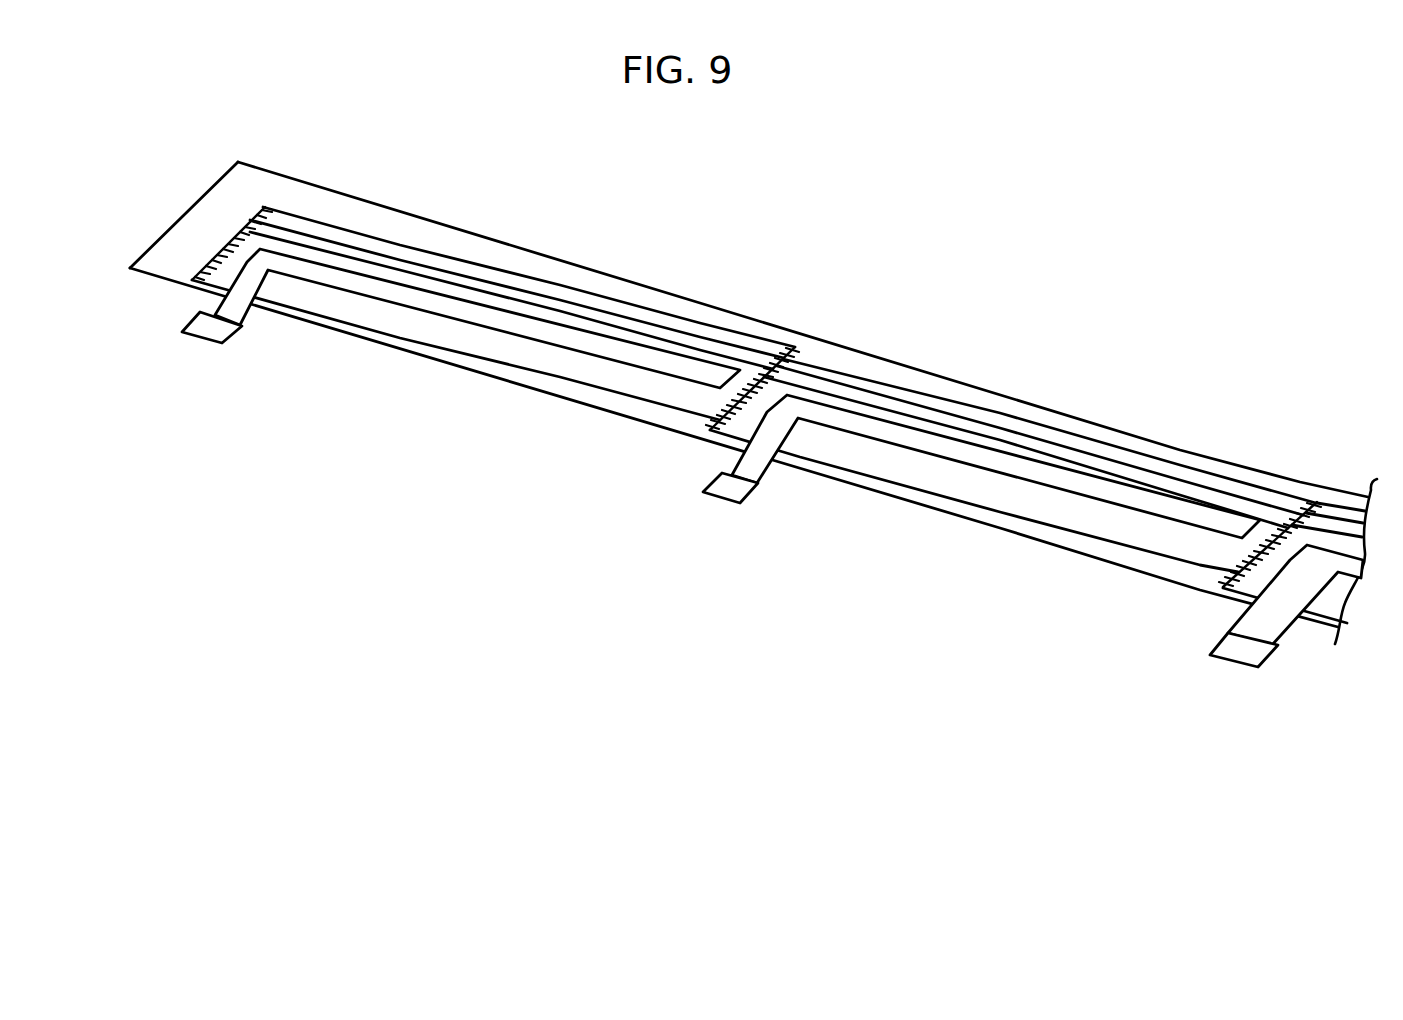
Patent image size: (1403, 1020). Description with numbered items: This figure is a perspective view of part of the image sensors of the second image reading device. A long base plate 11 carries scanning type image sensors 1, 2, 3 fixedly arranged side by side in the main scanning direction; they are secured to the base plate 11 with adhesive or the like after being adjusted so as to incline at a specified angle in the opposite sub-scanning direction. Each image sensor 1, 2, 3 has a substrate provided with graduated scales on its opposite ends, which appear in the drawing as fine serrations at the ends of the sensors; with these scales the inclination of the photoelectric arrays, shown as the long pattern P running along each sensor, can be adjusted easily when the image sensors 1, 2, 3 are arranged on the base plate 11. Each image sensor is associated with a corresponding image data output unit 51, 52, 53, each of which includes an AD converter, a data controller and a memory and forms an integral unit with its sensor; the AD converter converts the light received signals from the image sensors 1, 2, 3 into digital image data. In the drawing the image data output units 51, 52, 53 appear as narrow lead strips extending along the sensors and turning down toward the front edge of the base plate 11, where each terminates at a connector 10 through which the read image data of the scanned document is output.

The base plate 11 is at (350, 192).
The image sensor 1 is at (475, 265).
The image sensor 2 is at (928, 396).
The image sensor 3 is at (1332, 508).
The electrode pattern strip P is at (389, 260).
The image data output unit 51 is at (482, 320).
The image data output unit 52 is at (940, 455).
The image data output unit 53 is at (1352, 583).
The connector 10 is at (222, 335).